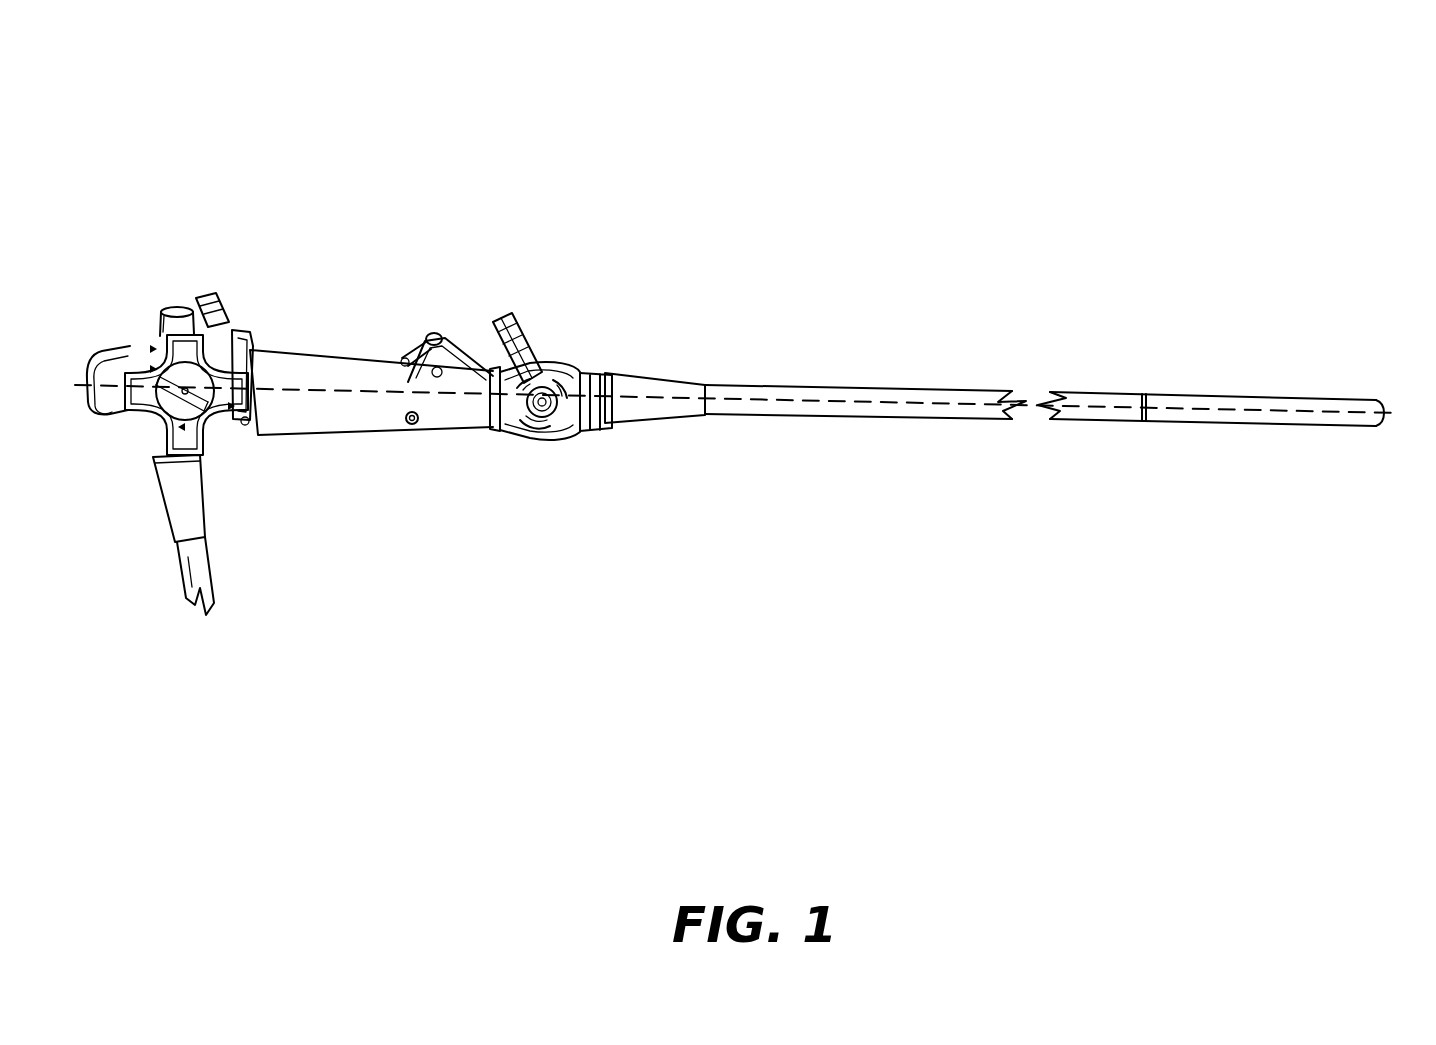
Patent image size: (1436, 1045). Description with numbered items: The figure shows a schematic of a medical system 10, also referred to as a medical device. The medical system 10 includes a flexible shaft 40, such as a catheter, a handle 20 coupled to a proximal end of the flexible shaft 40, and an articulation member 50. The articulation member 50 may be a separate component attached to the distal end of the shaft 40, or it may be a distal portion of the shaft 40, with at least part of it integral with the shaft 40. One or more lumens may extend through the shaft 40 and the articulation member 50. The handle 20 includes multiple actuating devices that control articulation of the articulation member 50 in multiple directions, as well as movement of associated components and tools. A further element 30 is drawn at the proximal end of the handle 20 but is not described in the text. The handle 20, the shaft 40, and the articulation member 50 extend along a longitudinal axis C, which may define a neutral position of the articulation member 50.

The medical system 10 is at (955, 168).
The handle 20 is at (430, 296).
The proximal control head with grip and cable 30 is at (186, 592).
The flexible shaft 40 is at (835, 376).
The articulation member 50 is at (1302, 381).
The longitudinal axis C is at (1381, 414).